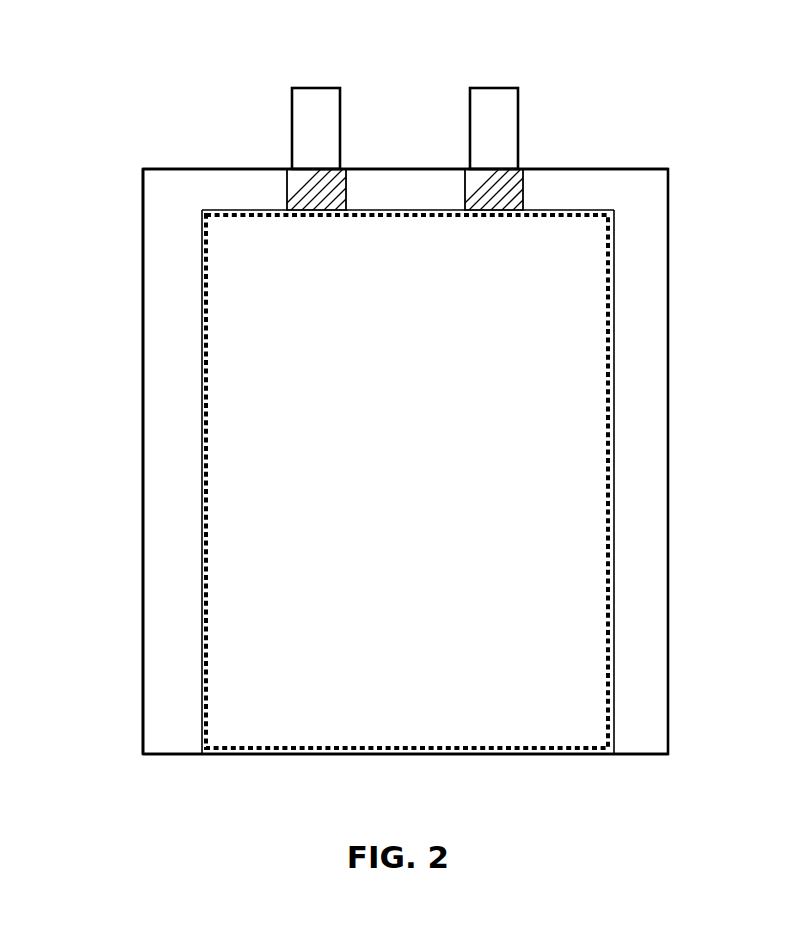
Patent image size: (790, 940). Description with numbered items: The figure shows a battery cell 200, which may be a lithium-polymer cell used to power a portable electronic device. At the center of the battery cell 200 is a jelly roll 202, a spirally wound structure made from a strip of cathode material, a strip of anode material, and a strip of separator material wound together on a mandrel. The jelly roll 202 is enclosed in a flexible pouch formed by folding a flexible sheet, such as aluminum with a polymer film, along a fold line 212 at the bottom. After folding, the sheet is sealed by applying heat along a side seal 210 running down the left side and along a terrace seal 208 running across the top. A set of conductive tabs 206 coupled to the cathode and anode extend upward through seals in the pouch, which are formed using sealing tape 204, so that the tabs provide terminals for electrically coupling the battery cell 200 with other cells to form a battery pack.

The battery cell 200 is at (143, 170).
The jelly roll 202 is at (407, 481).
The sealing tape 204 is at (322, 213).
The conductive tabs 206 is at (478, 88).
The terrace seal 208 is at (555, 168).
The side seal 210 is at (142, 453).
The fold line 212 is at (478, 753).